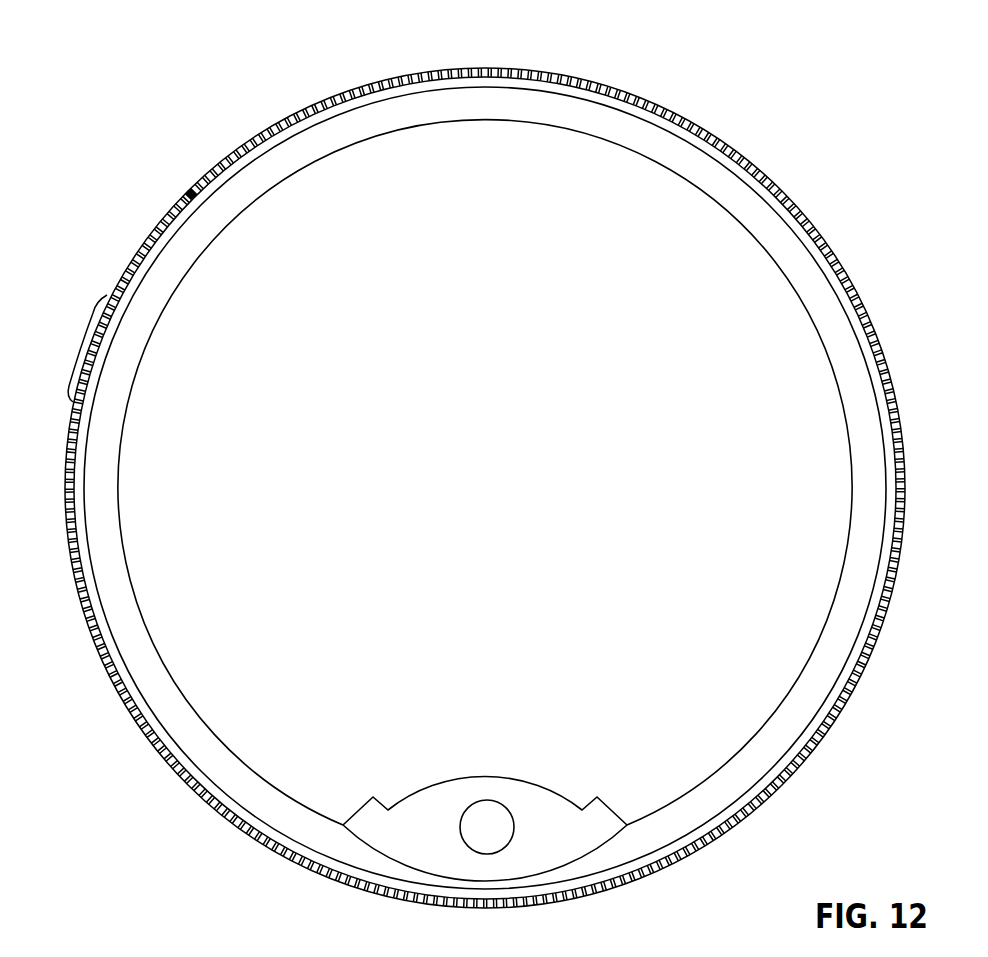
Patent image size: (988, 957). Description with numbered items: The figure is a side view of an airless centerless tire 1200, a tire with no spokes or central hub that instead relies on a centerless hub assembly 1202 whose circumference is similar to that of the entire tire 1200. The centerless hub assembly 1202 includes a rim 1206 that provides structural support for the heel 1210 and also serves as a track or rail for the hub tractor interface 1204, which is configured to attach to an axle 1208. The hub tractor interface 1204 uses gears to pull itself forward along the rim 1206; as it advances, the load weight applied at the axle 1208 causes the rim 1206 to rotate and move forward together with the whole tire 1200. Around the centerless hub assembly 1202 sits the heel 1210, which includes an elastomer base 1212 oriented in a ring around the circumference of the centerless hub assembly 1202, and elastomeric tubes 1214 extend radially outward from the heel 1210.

The airless centerless tire 1200 is at (161, 84).
The centerless hub assembly 1202 is at (409, 787).
The hub tractor interface 1204 is at (445, 845).
The rim 1206 is at (333, 843).
The axle 1208 is at (506, 839).
The heel 1210 is at (184, 186).
The elastomer base 1212 is at (146, 255).
The elastomeric tubes 1214 is at (80, 345).